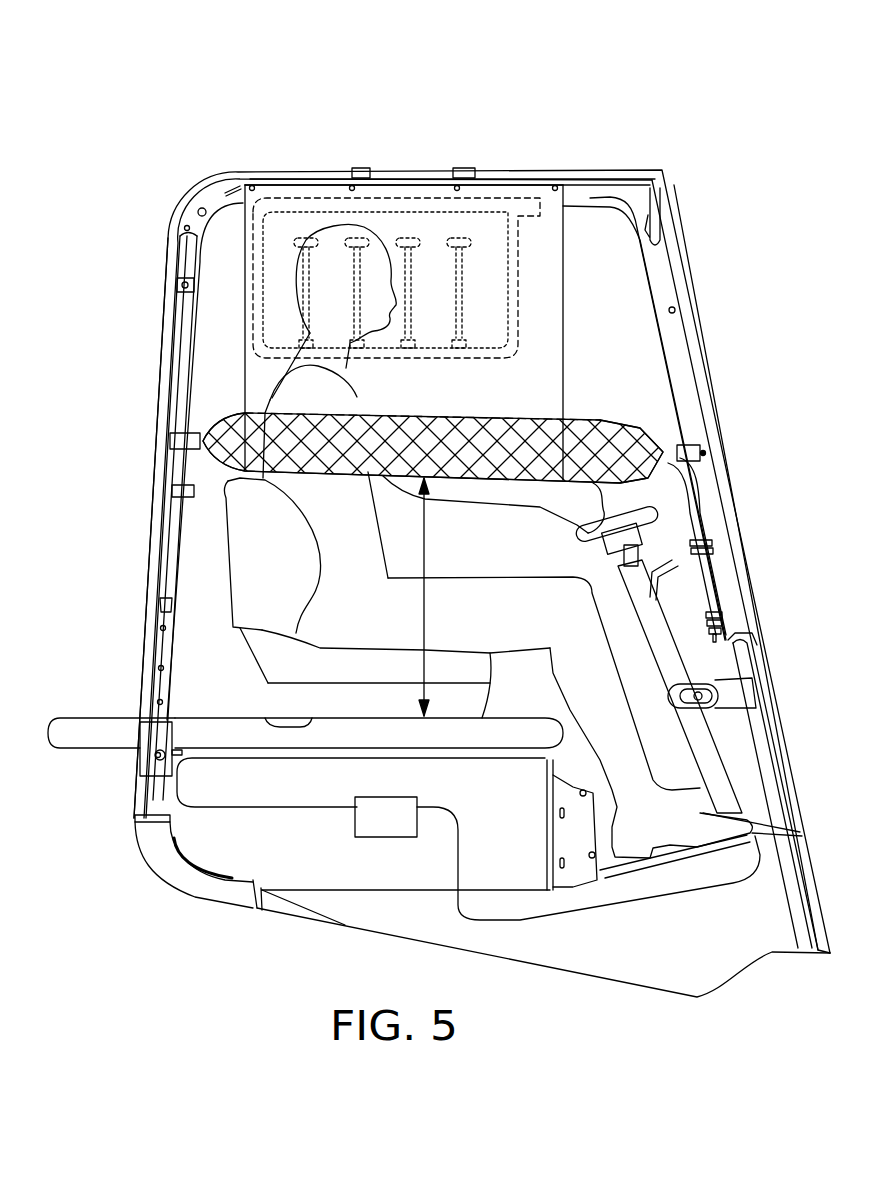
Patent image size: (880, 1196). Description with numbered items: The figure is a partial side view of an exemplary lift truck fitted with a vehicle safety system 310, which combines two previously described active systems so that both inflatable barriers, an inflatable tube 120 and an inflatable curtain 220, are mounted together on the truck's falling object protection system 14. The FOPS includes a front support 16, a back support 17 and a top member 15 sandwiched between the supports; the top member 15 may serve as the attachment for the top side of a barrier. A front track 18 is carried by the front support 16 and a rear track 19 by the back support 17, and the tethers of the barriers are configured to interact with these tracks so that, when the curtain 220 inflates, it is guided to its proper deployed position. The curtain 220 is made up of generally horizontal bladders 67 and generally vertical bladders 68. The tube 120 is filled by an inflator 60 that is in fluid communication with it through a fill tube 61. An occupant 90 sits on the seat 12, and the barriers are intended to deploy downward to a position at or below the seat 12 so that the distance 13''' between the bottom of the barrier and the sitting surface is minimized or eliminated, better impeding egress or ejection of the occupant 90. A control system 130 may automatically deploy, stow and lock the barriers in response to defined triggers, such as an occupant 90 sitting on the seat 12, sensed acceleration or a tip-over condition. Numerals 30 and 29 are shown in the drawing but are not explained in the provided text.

The vehicle safety system 310 is at (695, 110).
The falling object protection system (FOPS) 14 is at (694, 231).
The window panel 30 is at (272, 188).
The fastener 29 is at (350, 186).
The top member 15 is at (402, 178).
The horizontal bladders 67 is at (408, 212).
The vertical bladders 68 is at (497, 282).
The inflatable barrier or curtain 220 is at (545, 354).
The inflatable barrier (tube) 120 is at (578, 433).
The occupant 90 is at (357, 394).
The back support 17 is at (162, 310).
The rear track 19 is at (174, 398).
The front support 16 is at (690, 311).
The front track 18 is at (708, 455).
The fill tube 61 is at (694, 515).
The inflator 60 is at (708, 582).
The distance 13''' is at (462, 597).
The seat 12 is at (277, 668).
The control system 130 is at (387, 825).